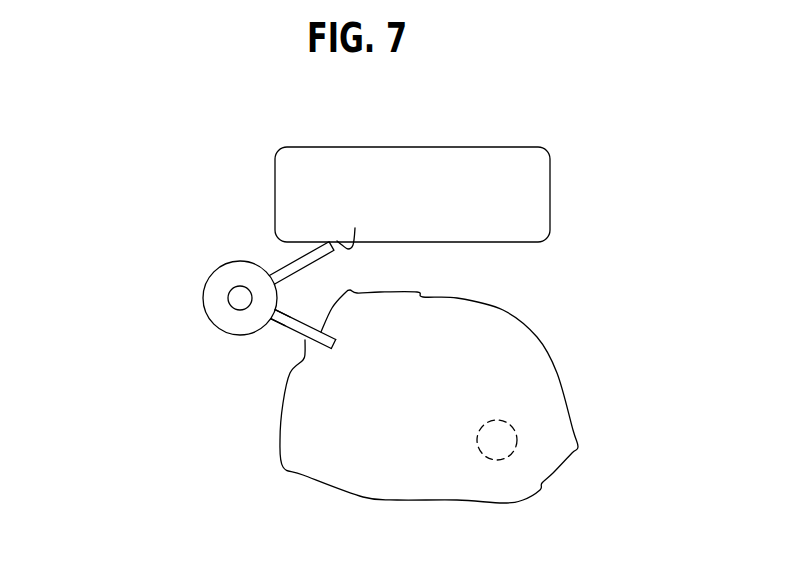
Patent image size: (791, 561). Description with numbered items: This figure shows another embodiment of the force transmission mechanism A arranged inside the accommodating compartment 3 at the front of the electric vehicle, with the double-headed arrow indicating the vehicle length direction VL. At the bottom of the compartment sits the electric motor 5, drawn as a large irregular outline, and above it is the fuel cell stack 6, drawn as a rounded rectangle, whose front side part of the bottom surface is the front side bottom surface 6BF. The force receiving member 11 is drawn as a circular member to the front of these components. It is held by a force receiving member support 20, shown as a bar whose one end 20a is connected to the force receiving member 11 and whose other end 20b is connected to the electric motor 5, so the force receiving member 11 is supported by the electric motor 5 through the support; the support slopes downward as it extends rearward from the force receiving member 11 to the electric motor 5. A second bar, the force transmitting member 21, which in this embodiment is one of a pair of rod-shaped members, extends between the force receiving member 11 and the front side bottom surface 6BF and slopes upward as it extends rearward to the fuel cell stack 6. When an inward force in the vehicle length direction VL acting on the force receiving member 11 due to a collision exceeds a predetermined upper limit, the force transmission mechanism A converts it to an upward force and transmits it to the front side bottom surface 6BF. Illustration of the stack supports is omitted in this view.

The accommodating compartment 3 is at (150, 500).
The electric motor 5 is at (542, 485).
The fuel cell stack 6 is at (490, 146).
The front side bottom surface 6BF is at (355, 228).
The force receiving member 11 is at (205, 280).
The force receiving member support 20 is at (288, 327).
The one end of the force receiving member support 20a is at (277, 323).
The other end of the force receiving member support 20b is at (326, 345).
The force transmitting member 21 is at (283, 262).
The force transmission mechanism A is at (110, 353).
The vehicle length direction VL is at (738, 509).